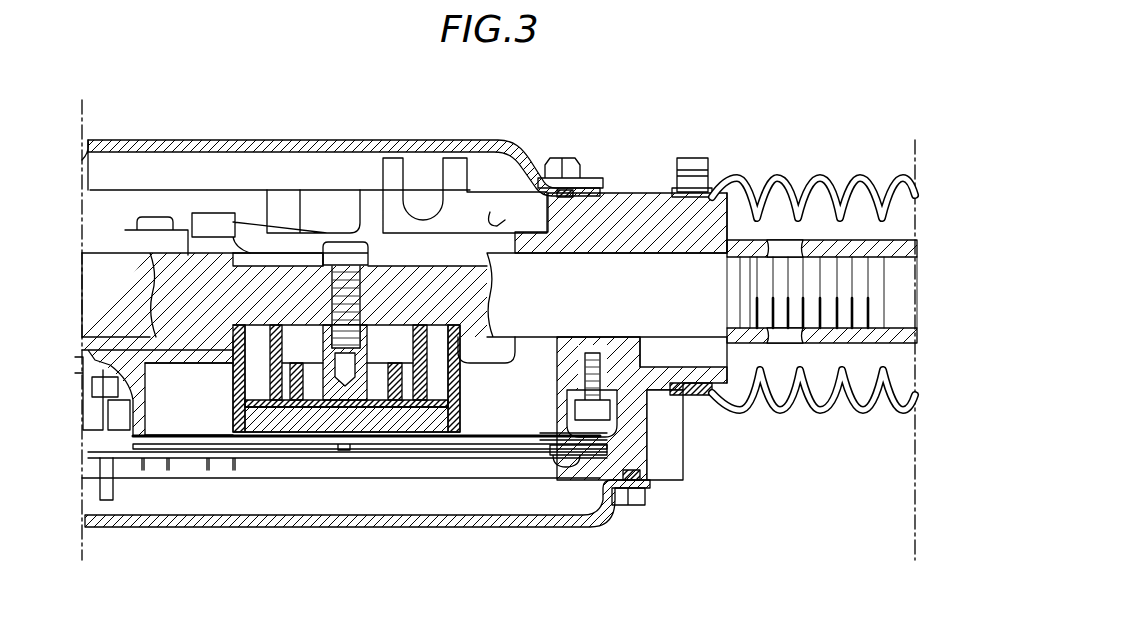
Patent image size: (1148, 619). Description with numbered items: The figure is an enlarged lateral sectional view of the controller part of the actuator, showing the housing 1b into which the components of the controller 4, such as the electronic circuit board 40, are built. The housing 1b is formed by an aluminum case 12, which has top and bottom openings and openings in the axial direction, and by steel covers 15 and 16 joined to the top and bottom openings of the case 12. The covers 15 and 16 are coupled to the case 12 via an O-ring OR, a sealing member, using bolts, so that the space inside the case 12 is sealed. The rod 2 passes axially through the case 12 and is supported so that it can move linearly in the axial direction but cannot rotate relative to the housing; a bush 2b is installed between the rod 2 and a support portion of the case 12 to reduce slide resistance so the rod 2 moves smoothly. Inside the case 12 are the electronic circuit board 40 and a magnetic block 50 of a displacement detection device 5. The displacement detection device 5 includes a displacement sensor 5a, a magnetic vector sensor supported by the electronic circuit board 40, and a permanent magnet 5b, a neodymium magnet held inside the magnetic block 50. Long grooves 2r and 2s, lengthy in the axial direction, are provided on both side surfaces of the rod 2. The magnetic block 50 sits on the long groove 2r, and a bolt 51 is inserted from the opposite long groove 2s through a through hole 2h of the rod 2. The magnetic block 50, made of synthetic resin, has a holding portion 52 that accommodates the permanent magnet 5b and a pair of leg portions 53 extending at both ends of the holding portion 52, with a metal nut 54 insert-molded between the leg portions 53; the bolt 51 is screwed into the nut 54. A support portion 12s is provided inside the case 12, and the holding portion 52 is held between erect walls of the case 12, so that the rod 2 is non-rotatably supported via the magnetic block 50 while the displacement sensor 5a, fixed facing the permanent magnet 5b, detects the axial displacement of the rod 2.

The housing 1b is at (187, 133).
The rod 2 is at (612, 270).
The long groove 2s is at (243, 262).
The through hole 2h is at (333, 253).
The long groove 2r is at (232, 380).
The bush 2b is at (645, 253).
The controller 4 is at (489, 163).
The displacement detection device 5 is at (304, 470).
The displacement sensor 5a is at (345, 452).
The permanent magnet 5b is at (275, 412).
The case 12 is at (653, 200).
The support portion 12s is at (577, 443).
The cover 15 is at (540, 186).
The cover 16 is at (590, 528).
The electronic circuit board 40 is at (450, 458).
The magnetic block 50 is at (473, 408).
The bolt 51 is at (352, 248).
The holding portion 52 is at (470, 440).
The leg portion 53 is at (240, 413).
The nut 54 is at (350, 400).
The O-ring OR is at (580, 193).